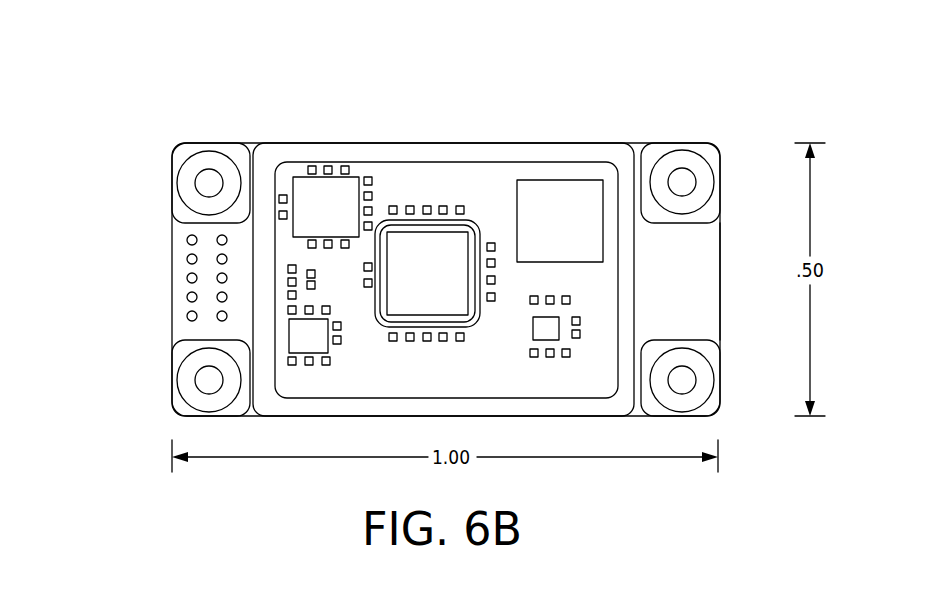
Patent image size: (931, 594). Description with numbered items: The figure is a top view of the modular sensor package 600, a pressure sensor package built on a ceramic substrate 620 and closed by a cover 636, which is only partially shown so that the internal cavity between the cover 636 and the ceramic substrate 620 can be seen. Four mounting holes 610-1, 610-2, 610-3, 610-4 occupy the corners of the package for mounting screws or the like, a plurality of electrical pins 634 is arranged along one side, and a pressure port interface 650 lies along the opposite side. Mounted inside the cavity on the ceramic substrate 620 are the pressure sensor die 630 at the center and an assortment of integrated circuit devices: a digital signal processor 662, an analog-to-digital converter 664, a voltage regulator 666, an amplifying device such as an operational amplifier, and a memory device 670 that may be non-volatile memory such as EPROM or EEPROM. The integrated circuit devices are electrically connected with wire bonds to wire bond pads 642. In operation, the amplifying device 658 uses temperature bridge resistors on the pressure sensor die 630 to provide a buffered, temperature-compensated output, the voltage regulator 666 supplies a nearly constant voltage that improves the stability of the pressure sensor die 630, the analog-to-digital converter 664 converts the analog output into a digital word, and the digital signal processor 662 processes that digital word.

The modular sensor package 600 is at (108, 124).
The mounting hole 610-1 is at (178, 382).
The mounting hole 610-2 is at (716, 376).
The mounting hole 610-3 is at (712, 156).
The mounting hole 610-4 is at (227, 152).
The ceramic substrate 620 is at (448, 184).
The pressure sensor die 630 is at (446, 279).
The electrical pins 634 is at (166, 270).
The cover 636 is at (598, 143).
The wire bond pads 642 is at (594, 327).
The pressure port interface 650 is at (722, 233).
The operational amplifier 658 is at (328, 348).
The digital signal processor 662 is at (542, 249).
The analog-to-digital converter 664 is at (346, 230).
The voltage regulator 666 is at (281, 283).
The memory device 670 is at (533, 328).